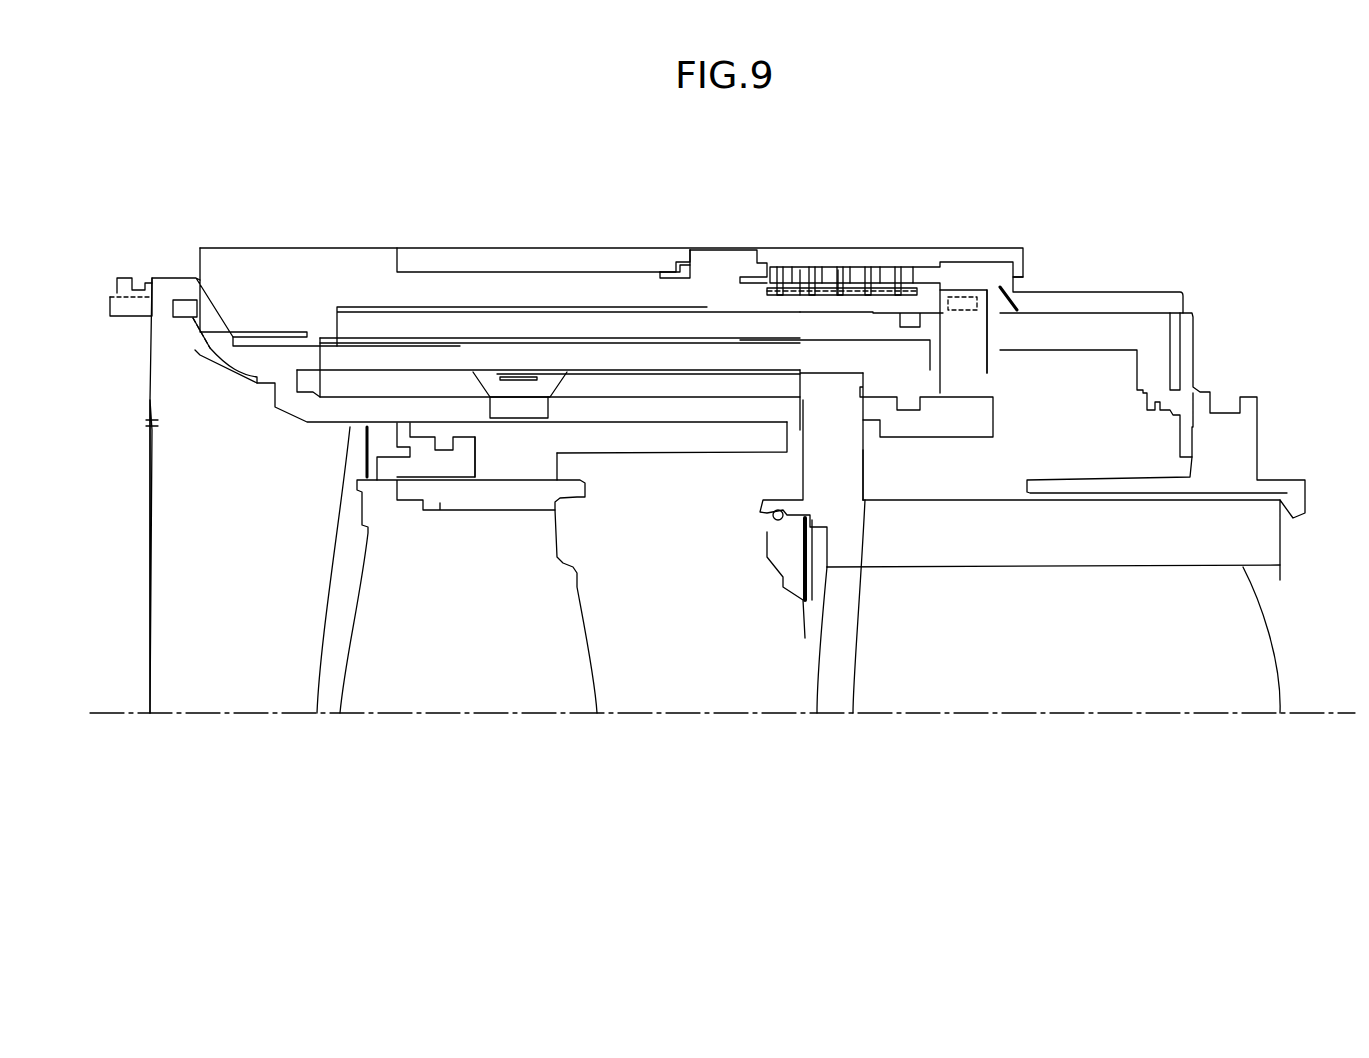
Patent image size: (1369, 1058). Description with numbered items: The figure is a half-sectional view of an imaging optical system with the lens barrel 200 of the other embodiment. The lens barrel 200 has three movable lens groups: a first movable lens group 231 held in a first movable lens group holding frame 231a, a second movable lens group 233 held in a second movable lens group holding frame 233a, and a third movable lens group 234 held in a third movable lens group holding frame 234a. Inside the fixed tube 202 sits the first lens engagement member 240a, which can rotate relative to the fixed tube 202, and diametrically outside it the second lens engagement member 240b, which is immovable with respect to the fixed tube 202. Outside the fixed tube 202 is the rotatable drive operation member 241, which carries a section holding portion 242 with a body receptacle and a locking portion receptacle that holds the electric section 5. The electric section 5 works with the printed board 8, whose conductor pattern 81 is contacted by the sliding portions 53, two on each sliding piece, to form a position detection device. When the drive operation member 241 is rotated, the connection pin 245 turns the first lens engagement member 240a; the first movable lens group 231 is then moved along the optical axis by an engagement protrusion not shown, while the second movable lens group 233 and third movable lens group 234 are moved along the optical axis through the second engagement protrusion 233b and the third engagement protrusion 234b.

The lens barrel 200 is at (1220, 220).
The fixed tube 202 is at (673, 297).
The first movable lens group 231 is at (228, 690).
The first movable lens group holding frame 231a is at (270, 348).
The second movable lens group 233 is at (455, 688).
The second movable lens group holding frame 233a is at (520, 455).
The second engagement protrusion 233b is at (520, 390).
The third movable lens group 234 is at (1088, 688).
The third movable lens group holding frame 234a is at (995, 548).
The third engagement protrusion 234b is at (840, 430).
The first lens engagement member 240a is at (932, 420).
The second lens engagement member 240b is at (620, 383).
The drive operation member 241 is at (727, 257).
The section holding portion 242 is at (917, 260).
The connection pin 245 is at (973, 340).
The electric section 5 is at (803, 273).
The printed board 8 is at (833, 273).
The sliding portion 53 is at (800, 267).
The conductor pattern 81 is at (822, 263).